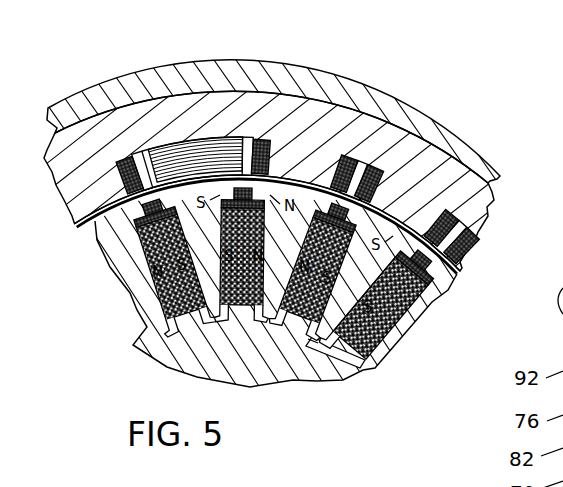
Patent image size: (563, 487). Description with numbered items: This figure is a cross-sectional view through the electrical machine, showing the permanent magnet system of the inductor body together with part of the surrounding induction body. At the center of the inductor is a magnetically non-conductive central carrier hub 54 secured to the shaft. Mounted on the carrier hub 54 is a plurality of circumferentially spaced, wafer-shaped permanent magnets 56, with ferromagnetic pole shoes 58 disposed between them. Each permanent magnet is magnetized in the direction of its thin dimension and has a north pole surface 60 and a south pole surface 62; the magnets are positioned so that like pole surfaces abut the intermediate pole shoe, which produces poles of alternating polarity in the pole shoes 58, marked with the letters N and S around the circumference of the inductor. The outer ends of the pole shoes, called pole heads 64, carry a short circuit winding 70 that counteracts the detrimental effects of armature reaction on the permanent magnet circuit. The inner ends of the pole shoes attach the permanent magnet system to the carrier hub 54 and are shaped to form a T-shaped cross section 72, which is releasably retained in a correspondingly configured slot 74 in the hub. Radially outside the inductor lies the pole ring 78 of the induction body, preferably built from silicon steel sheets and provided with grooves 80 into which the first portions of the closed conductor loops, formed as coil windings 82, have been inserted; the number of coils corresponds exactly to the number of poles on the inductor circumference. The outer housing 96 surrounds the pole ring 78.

The central carrier hub 54 is at (278, 378).
The permanent magnets 56 is at (223, 285).
The pole shoes 58 is at (398, 302).
The north pole surface 60 is at (150, 263).
The south pole surface 62 is at (223, 272).
The pole heads 64 is at (412, 249).
The short circuit winding 70 is at (405, 277).
The T-shaped cross section 72 is at (343, 380).
The slot 74 is at (315, 345).
The pole ring 78 is at (492, 207).
The grooves 80 is at (457, 222).
The coil windings 82 is at (191, 148).
The housing 96 is at (291, 66).